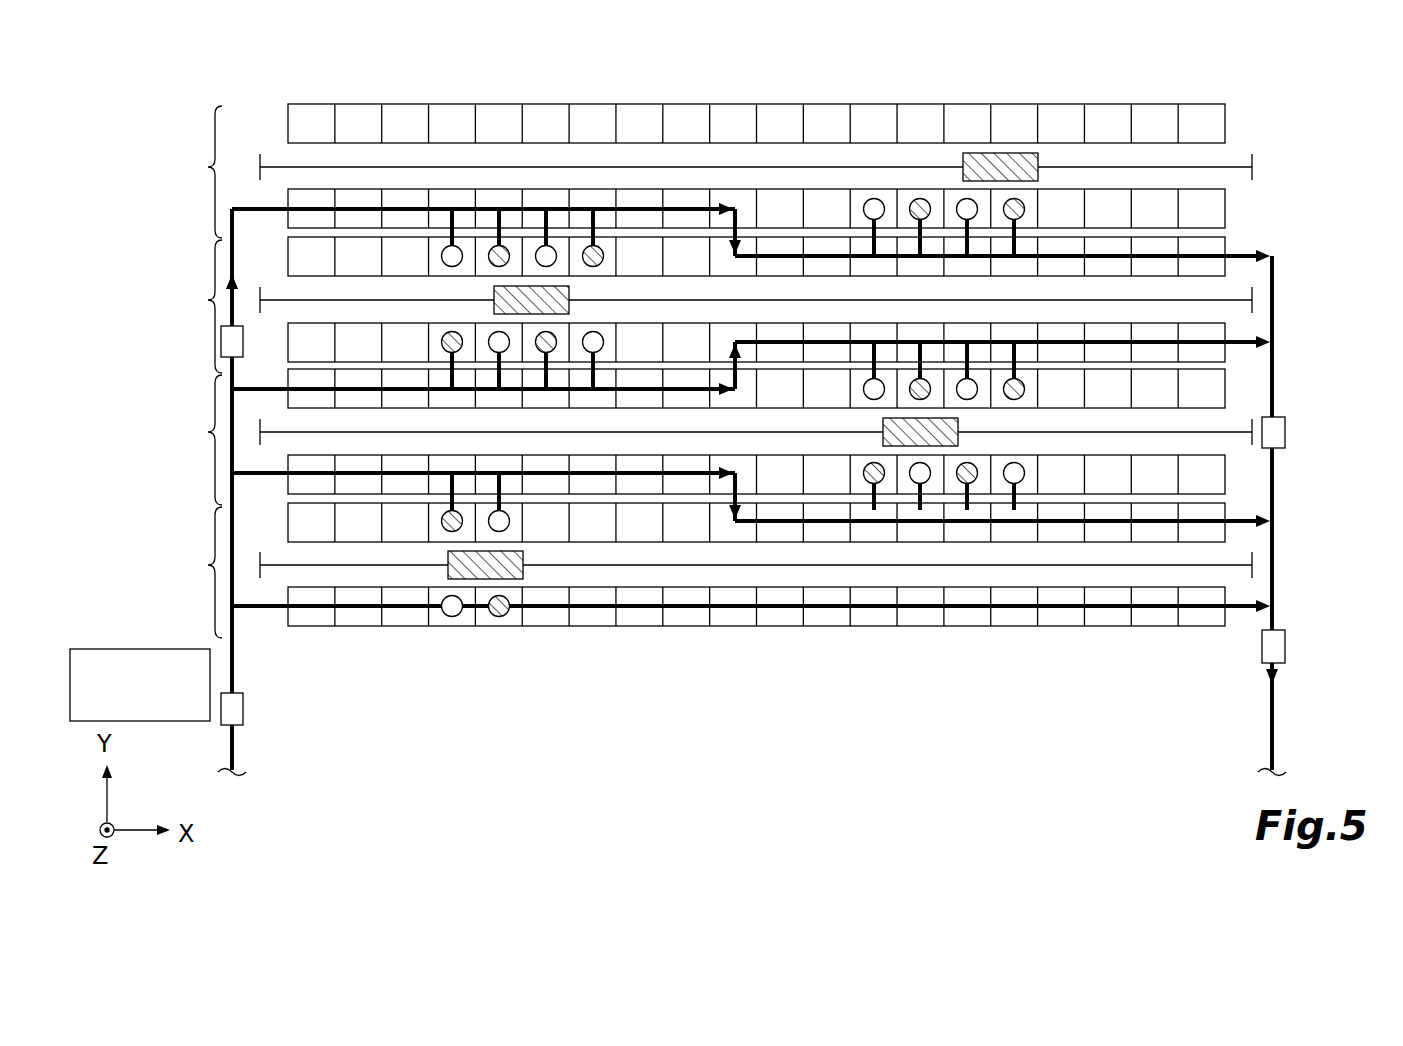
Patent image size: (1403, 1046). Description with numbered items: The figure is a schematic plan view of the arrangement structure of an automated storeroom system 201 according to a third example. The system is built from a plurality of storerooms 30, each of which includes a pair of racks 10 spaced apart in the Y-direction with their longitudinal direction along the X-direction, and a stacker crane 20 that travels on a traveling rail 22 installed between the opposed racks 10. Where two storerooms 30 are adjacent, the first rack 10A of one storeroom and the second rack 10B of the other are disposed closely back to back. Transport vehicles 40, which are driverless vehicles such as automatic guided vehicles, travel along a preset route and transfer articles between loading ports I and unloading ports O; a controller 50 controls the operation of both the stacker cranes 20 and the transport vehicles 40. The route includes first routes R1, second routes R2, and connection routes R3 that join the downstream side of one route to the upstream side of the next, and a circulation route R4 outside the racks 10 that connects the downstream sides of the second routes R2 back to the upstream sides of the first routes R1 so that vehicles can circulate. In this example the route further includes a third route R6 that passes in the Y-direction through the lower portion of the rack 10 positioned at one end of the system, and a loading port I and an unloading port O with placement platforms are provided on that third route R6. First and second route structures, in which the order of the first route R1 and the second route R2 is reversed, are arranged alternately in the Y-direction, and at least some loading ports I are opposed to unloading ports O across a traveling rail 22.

The automated storeroom system 201 is at (172, 108).
The rack 10 is at (1242, 116).
The first rack 10A is at (1244, 204).
The second rack 10B is at (1244, 241).
The stacker crane 20 is at (1003, 152).
The traveling rail 22 is at (1157, 165).
The storeroom 30 is at (198, 372).
The transport vehicle 40 is at (244, 336).
The controller 50 is at (90, 648).
The first route R1 is at (636, 207).
The second route R2 is at (818, 253).
The connection route R3 is at (738, 238).
The circulation route R4 is at (230, 522).
The third route R6 is at (1113, 608).
The loading port I is at (447, 244).
The unloading port O is at (492, 244).